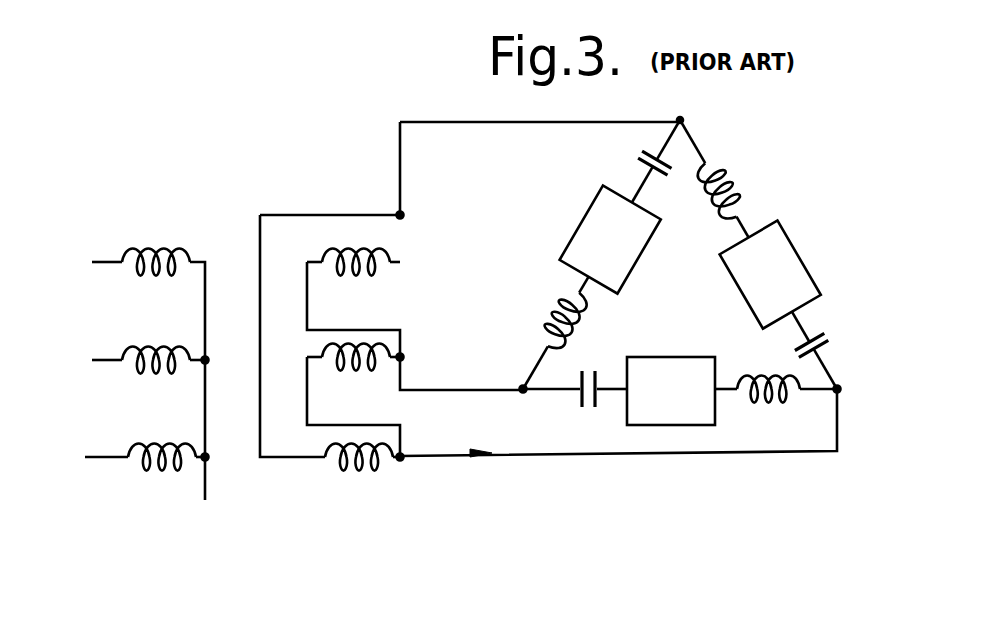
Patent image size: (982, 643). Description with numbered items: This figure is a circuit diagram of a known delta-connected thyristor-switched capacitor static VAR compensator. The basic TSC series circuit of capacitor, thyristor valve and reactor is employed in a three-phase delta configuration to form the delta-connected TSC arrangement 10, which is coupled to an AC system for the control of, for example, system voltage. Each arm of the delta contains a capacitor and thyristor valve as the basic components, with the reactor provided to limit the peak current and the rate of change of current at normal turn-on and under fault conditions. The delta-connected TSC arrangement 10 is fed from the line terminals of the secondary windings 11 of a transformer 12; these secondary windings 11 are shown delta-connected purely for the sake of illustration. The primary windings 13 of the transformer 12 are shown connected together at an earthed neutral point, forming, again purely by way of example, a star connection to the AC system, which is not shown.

The delta-connected TSC arrangement 10 is at (690, 310).
The secondary windings 11 is at (338, 474).
The transformer 12 is at (364, 351).
The primary windings 13 is at (155, 474).